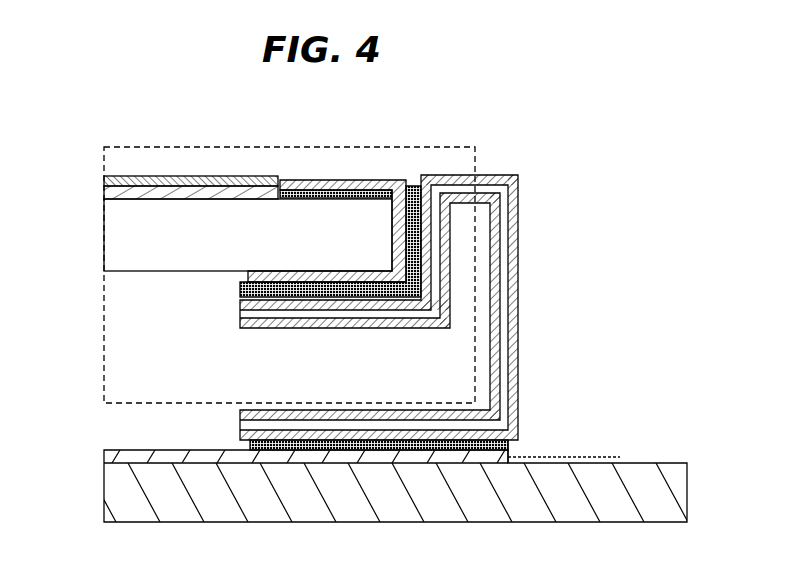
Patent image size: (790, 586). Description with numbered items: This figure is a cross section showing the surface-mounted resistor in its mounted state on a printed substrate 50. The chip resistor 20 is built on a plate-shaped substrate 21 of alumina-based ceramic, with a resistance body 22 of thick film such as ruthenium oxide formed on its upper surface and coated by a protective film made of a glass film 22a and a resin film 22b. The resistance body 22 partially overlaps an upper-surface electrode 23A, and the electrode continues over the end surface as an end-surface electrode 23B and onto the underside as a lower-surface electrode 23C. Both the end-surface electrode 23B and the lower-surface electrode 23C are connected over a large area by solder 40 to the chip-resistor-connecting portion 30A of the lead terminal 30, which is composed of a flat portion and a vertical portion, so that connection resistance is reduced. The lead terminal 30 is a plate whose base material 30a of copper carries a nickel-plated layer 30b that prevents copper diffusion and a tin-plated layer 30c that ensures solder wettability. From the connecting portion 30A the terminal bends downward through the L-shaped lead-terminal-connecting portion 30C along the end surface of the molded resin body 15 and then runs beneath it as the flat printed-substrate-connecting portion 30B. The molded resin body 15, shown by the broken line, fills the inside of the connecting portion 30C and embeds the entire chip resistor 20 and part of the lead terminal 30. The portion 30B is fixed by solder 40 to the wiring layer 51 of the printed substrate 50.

The molded resin body 15 is at (312, 147).
The chip resistor 20 is at (339, 194).
The plate-shaped substrate 21 is at (138, 271).
The resistance body 22 is at (191, 182).
The glass film 22a is at (140, 190).
The resin film 22b is at (213, 180).
The upper-surface electrode 23A is at (297, 190).
The end-surface electrode 23B is at (392, 238).
The lower-surface electrode 23C is at (297, 282).
The lead terminal 30 is at (412, 290).
The chip-resistor-connecting portion 30A is at (307, 328).
The printed-substrate-connecting portion 30B is at (327, 410).
The lead-terminal-connecting portion 30C is at (498, 307).
The base material 30a is at (500, 345).
The nickel-plated layer 30b is at (512, 311).
The tin-plated layer 30c is at (518, 278).
The solder 40 is at (350, 318).
The printed substrate 50 is at (420, 522).
The wiring layer 51 is at (615, 457).